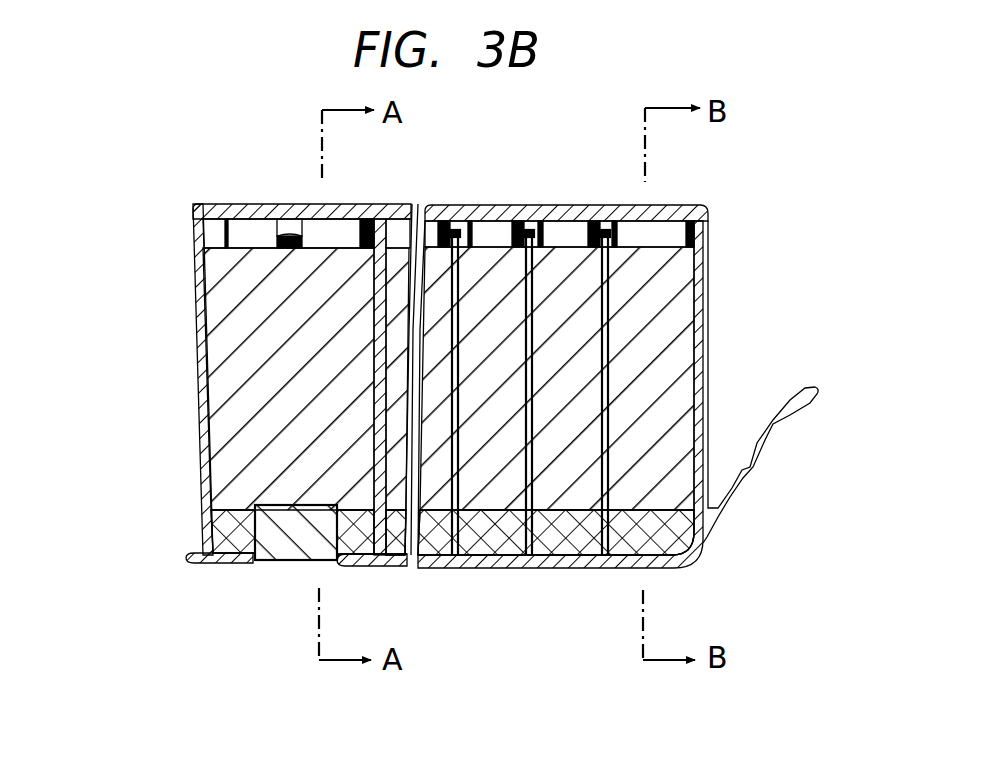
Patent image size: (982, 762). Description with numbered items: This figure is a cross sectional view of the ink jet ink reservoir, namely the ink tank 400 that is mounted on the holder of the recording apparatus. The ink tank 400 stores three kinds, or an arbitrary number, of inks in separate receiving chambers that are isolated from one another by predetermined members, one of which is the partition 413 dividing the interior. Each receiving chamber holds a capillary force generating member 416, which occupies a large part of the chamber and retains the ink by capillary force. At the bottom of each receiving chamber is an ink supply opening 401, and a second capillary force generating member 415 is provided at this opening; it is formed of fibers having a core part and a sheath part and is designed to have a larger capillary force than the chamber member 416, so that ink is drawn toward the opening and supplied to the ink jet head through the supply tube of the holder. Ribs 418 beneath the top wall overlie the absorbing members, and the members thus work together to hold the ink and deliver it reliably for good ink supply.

The ink tank 400 is at (744, 253).
The ink supply opening 401 is at (339, 573).
The partition wall 413 is at (380, 215).
The capillary force generating member 415 is at (292, 567).
The capillary force generating member 416 is at (208, 391).
The rib / filter holder 418 is at (296, 242).